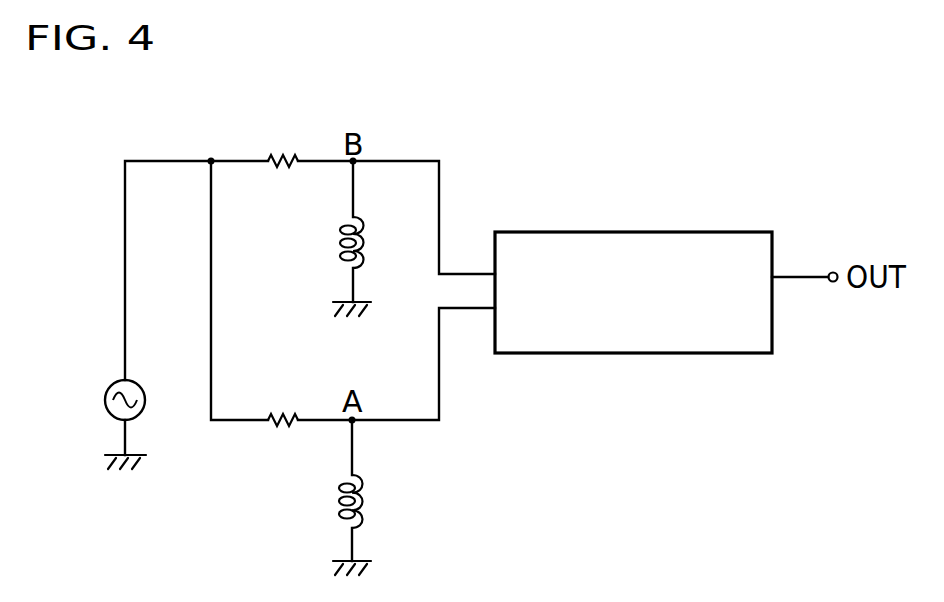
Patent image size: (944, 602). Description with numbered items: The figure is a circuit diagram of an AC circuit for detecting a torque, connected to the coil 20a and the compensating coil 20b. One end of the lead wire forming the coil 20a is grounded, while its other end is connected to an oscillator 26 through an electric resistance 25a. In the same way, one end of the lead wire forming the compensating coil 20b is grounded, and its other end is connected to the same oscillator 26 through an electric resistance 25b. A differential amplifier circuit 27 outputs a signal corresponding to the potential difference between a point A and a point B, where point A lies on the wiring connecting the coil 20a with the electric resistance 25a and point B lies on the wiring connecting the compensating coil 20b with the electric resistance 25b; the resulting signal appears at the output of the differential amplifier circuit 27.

The electric resistance 25b is at (284, 153).
The electric resistance 25a is at (284, 413).
The compensating coil 20b is at (338, 245).
The coil 20a is at (338, 503).
The oscillator 26 is at (113, 383).
The differential amplifier circuit 27 is at (596, 233).